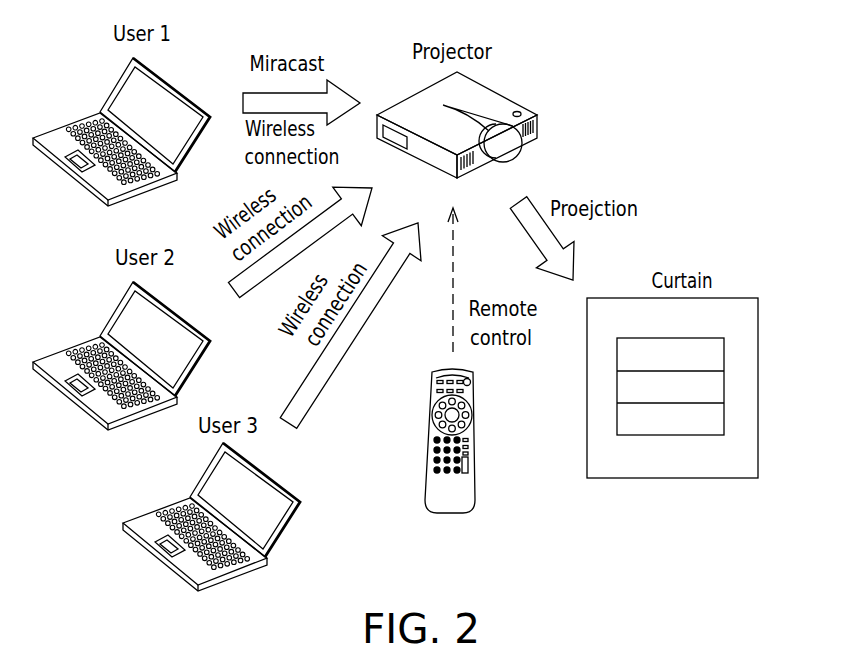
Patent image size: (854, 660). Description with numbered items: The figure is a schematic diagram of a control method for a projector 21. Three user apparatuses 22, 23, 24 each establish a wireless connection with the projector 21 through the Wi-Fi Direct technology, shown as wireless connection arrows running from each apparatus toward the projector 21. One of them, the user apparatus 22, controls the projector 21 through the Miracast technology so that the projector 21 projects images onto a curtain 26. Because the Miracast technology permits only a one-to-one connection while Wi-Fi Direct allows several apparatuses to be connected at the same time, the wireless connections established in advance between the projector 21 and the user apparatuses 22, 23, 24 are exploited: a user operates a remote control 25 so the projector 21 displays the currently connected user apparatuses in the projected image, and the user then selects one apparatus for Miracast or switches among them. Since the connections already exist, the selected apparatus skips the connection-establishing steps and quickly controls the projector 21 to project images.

The projector 21 is at (537, 125).
The user apparatus 22 is at (197, 145).
The user apparatus 23 is at (197, 369).
The user apparatus 24 is at (287, 530).
The remote control 25 is at (475, 455).
The curtain 26 is at (759, 388).